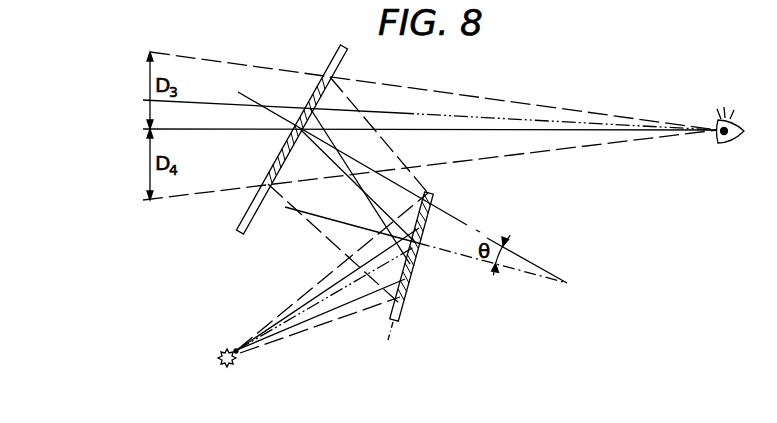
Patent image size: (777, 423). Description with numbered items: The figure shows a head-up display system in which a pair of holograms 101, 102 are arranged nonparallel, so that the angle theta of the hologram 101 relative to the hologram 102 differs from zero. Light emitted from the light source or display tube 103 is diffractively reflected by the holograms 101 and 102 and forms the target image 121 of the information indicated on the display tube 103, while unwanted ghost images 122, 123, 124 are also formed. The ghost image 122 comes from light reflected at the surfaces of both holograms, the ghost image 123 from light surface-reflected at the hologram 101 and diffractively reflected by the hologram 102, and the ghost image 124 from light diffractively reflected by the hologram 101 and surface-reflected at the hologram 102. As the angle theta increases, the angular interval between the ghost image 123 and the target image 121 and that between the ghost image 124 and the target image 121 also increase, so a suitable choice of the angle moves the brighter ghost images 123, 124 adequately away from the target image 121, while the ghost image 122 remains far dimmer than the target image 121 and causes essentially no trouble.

The hologram 101 is at (414, 266).
The hologram 102 is at (263, 198).
The light source or display tube 103 is at (226, 368).
The target image 121 is at (375, 130).
The ghost image 122 is at (375, 109).
The ghost image 123 is at (375, 83).
The ghost image 124 is at (375, 171).